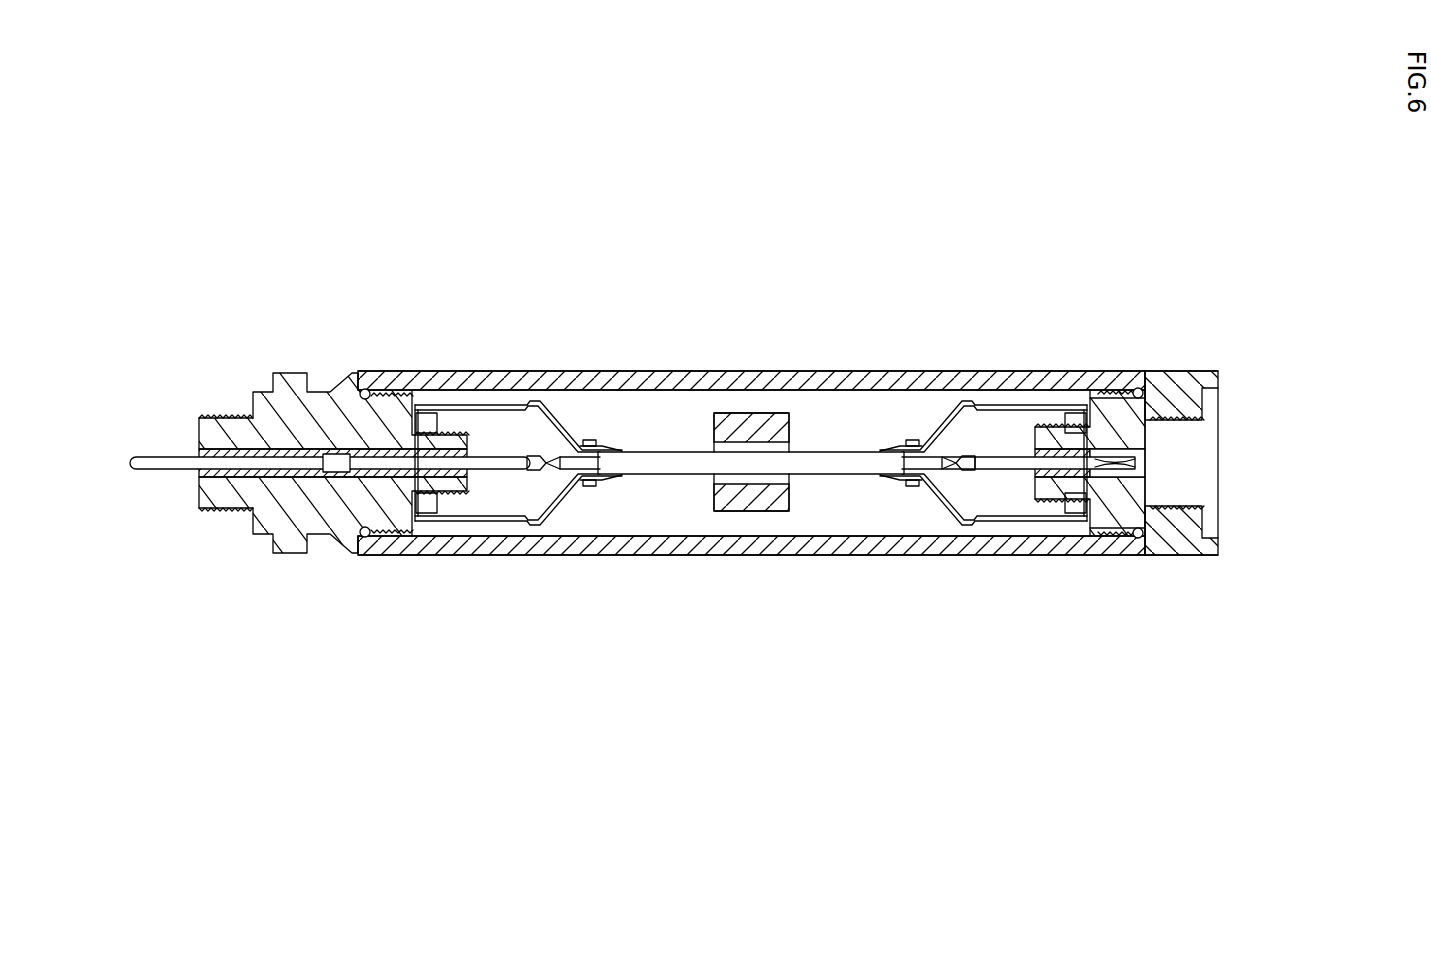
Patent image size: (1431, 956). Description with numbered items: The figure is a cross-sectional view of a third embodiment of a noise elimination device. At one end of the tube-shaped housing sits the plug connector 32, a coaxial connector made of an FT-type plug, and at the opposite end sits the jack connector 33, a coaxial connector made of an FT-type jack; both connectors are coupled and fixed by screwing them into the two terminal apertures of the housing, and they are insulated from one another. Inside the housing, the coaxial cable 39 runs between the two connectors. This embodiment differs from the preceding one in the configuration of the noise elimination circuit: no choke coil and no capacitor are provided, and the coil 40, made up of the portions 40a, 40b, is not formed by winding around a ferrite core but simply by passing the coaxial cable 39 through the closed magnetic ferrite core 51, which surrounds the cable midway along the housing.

The plug connector 32 is at (177, 412).
The jack connector 33 is at (1246, 432).
The coaxial cable 39 is at (845, 474).
The coil 40 is at (751, 388).
The coil 40a is at (518, 463).
The coil 40b is at (983, 463).
The closed magnetic ferrite core 51 is at (743, 505).